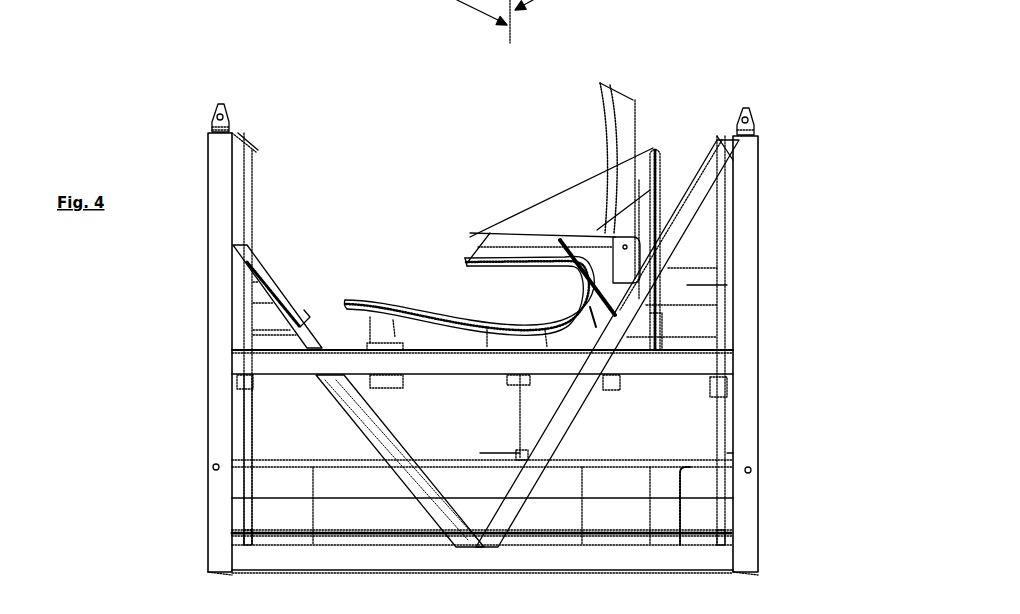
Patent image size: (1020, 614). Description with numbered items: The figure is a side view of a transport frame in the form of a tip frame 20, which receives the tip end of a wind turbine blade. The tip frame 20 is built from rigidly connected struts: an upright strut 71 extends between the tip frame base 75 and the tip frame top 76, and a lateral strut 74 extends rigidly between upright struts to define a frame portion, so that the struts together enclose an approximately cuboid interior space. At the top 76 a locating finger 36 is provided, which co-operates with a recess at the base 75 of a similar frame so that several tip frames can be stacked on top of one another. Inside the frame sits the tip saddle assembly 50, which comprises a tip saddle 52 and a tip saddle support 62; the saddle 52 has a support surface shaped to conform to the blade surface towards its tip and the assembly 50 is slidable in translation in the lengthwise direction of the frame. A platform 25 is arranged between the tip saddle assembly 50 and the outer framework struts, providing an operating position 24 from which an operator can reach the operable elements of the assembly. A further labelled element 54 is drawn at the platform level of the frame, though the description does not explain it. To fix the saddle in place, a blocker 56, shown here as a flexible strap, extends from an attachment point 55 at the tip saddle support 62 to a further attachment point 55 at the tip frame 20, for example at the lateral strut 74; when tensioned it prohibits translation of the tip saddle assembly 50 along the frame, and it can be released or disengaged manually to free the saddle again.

The tip frame 20 is at (90, 112).
The operating position 24 is at (700, 90).
The platform 25 is at (687, 350).
The locating finger 36 is at (217, 105).
The tip saddle assembly 50 is at (437, 200).
The tip saddle 52 is at (437, 310).
The platform 54 is at (543, 373).
The attachment point 55 is at (232, 491).
The blocker 56 is at (608, 402).
The tip saddle support 62 is at (700, 453).
The proximal upright strut 71 is at (217, 408).
The lateral strut 74 is at (243, 360).
The tip frame base 75 is at (183, 560).
The tip frame top 76 is at (800, 133).